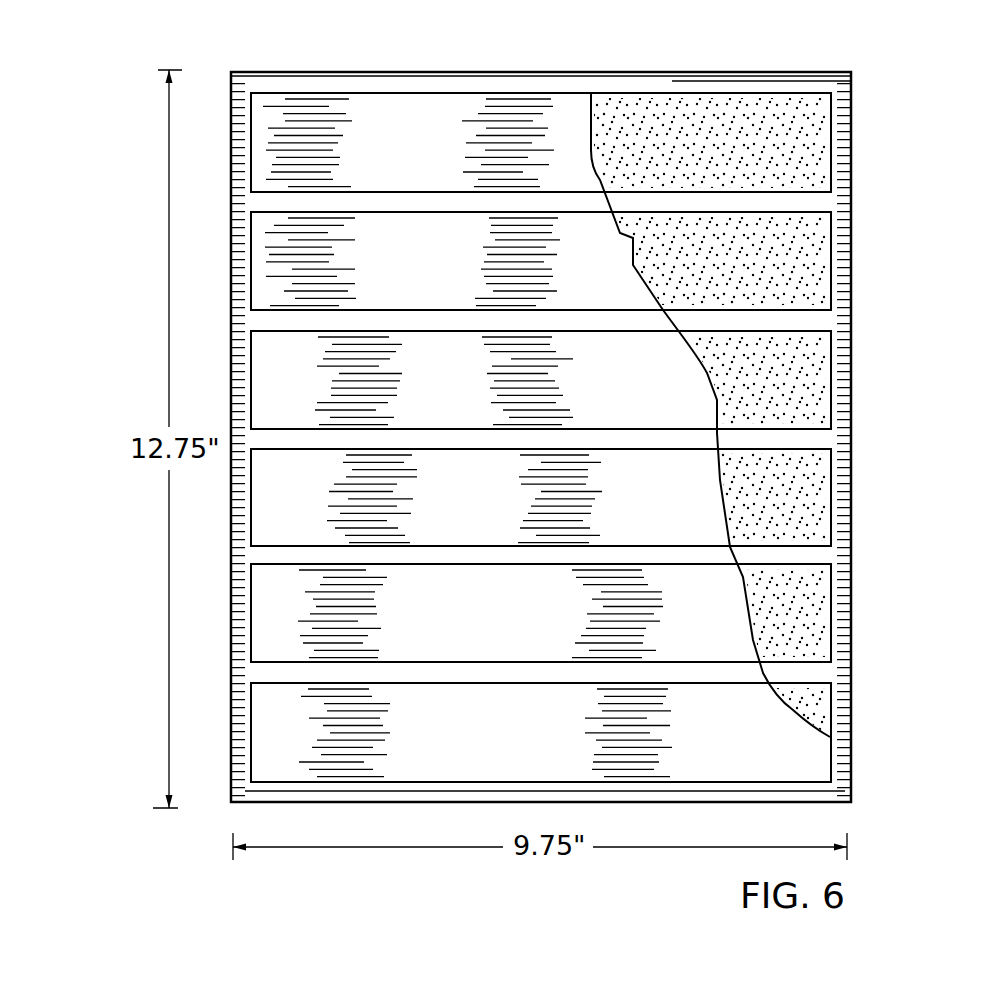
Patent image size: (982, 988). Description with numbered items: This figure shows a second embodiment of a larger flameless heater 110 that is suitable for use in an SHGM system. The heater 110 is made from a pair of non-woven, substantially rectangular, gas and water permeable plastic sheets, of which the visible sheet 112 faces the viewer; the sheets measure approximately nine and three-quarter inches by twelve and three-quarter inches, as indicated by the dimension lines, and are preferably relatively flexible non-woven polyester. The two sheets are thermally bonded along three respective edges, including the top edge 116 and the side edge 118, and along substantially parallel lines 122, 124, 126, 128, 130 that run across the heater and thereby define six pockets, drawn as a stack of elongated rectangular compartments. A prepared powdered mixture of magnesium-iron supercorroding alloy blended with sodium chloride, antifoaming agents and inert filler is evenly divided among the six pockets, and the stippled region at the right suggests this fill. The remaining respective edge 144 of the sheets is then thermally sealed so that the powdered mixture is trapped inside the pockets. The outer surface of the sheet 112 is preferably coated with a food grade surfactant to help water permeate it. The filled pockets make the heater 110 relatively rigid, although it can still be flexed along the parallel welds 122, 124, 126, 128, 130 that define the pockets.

The flameless heater 110 is at (443, 856).
The plastic sheet 112 is at (381, 118).
The edge 116 is at (706, 77).
The edge 118 is at (250, 633).
The parallel line 122 is at (841, 200).
The parallel line 124 is at (845, 317).
The parallel line 126 is at (845, 438).
The parallel line 128 is at (837, 556).
The parallel line 130 is at (837, 673).
The remaining edge 144 is at (837, 735).